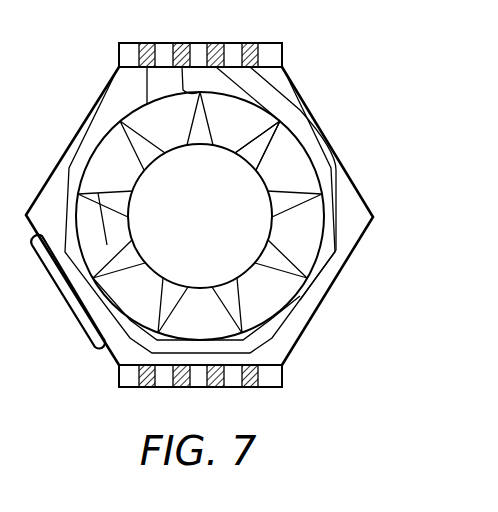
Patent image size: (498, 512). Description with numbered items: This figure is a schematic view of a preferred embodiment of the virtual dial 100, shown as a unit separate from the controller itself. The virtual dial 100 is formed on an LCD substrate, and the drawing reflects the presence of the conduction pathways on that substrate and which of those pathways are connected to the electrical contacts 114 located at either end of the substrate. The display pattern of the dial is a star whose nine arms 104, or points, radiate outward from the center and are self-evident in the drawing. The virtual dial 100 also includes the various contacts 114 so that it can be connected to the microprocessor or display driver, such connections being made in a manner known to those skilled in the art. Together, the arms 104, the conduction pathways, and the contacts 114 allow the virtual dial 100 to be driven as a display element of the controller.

The virtual dial 100 is at (331, 78).
The arm 104 is at (298, 192).
The electrical contact 114 is at (262, 43).